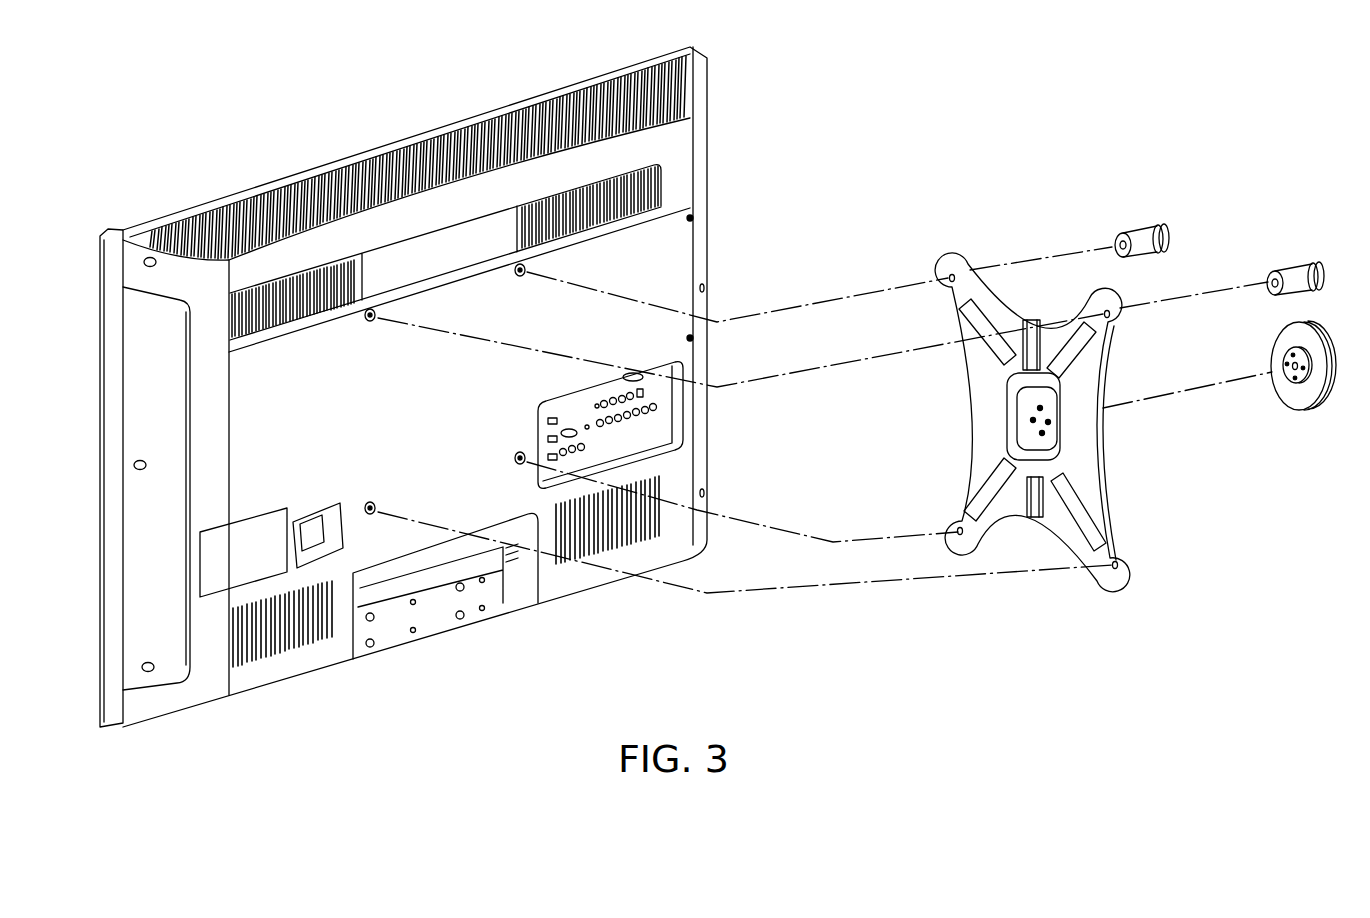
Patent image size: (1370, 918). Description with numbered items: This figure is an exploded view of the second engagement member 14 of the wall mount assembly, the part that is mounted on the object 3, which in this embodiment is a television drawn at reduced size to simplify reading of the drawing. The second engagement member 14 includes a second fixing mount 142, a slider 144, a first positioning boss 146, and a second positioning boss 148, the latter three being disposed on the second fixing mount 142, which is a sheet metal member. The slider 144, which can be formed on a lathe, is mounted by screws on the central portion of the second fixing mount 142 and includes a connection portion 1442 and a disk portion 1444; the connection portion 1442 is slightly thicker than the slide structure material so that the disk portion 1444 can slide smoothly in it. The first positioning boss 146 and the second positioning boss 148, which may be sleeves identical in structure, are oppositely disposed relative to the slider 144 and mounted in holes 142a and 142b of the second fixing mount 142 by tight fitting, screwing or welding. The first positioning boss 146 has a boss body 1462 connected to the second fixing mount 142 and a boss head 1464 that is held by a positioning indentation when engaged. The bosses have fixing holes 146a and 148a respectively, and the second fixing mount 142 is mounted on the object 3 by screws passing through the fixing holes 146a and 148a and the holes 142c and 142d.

The object 3 is at (468, 200).
The second engagement member 14 is at (1020, 228).
The second fixing mount 142 is at (1099, 441).
The hole 142a is at (1110, 313).
The hole 142b is at (948, 277).
The hole 142c is at (1117, 564).
The hole 142d is at (958, 530).
The slider 144 is at (1347, 456).
The connection portion 1442 is at (1282, 383).
The disk portion 1444 is at (1307, 398).
The first positioning boss 146 is at (1345, 183).
The boss body 1462 is at (1278, 280).
The boss head 1464 is at (1313, 267).
The fixing hole 146a is at (1264, 281).
The second positioning boss 148 is at (1142, 237).
The fixing hole 148a is at (1118, 243).